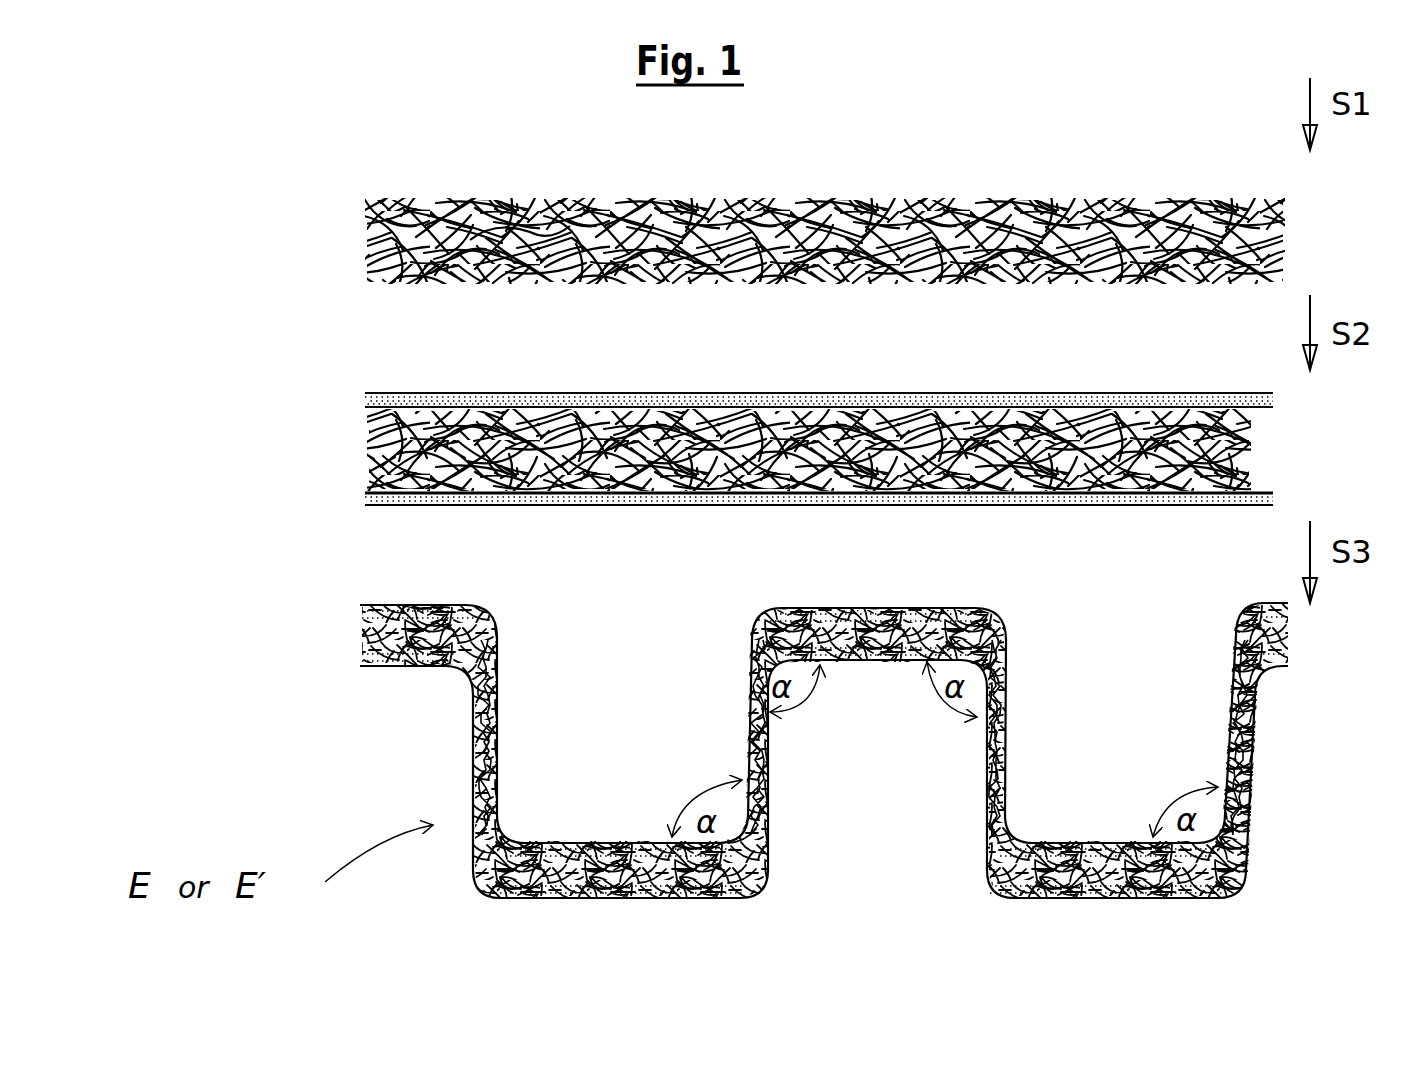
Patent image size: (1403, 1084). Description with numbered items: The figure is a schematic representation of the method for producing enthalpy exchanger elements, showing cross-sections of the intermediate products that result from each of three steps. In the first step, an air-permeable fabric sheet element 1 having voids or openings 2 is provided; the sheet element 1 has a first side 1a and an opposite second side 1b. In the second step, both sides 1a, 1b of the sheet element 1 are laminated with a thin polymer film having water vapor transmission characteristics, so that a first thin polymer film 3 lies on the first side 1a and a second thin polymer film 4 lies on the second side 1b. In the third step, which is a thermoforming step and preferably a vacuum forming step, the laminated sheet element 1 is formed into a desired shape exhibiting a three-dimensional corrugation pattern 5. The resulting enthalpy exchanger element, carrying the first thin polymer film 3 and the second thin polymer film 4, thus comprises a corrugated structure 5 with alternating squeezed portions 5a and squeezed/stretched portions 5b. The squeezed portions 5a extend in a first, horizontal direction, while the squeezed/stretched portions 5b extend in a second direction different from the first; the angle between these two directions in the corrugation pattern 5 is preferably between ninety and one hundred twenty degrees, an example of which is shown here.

The sheet element 1 is at (335, 253).
The first side 1a is at (795, 190).
The second side 1b is at (805, 288).
The voids or openings 2 is at (520, 222).
The first thin polymer film 3 is at (645, 395).
The second thin polymer film 4 is at (673, 503).
The corrugation pattern 5 is at (317, 777).
The squeezed portion 5a is at (393, 595).
The squeezed/stretched portion 5b is at (505, 715).